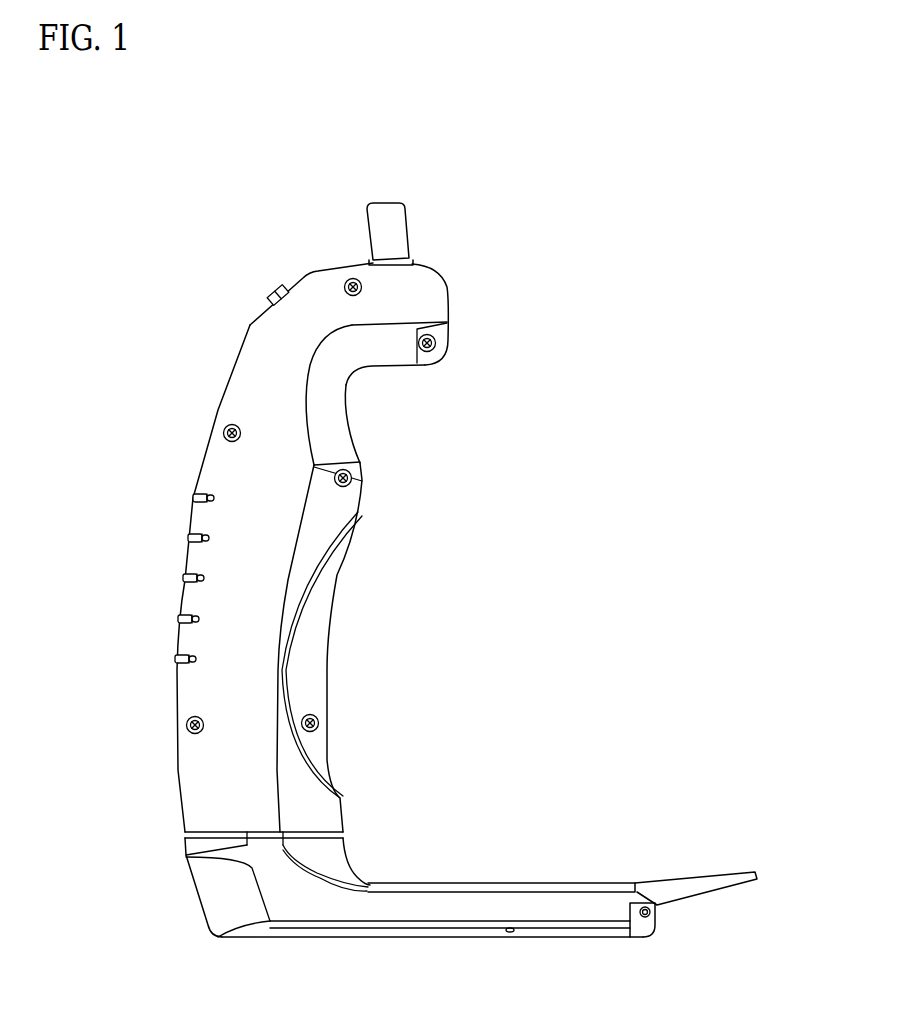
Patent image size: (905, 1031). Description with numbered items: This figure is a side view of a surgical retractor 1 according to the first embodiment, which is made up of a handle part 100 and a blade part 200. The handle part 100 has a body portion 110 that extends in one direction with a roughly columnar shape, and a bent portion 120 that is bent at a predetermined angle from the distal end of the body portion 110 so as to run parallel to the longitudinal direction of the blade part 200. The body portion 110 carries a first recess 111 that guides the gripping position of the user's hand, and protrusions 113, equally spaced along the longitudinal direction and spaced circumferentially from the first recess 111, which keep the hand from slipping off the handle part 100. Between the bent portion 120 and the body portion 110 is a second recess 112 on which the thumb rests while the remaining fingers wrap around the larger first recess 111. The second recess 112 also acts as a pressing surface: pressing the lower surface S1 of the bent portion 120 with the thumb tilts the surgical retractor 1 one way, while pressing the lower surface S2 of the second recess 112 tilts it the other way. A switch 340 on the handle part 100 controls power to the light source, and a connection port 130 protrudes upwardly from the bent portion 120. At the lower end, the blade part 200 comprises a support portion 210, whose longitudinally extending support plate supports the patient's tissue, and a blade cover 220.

The surgical retractor 1 is at (214, 176).
The handle part 100 is at (490, 630).
The body portion 110 is at (245, 557).
The first recess 111 is at (310, 655).
The second recess 112 is at (330, 402).
The protrusions 113 is at (177, 620).
The bent portion 120 is at (405, 302).
The connection port 130 is at (393, 230).
The switch 340 is at (268, 295).
The lower surface of the bent portion S1 is at (395, 370).
The lower surface of the second recess S2 is at (352, 459).
The blade part 200 is at (572, 858).
The support portion 210 is at (315, 898).
The blade cover 220 is at (227, 903).